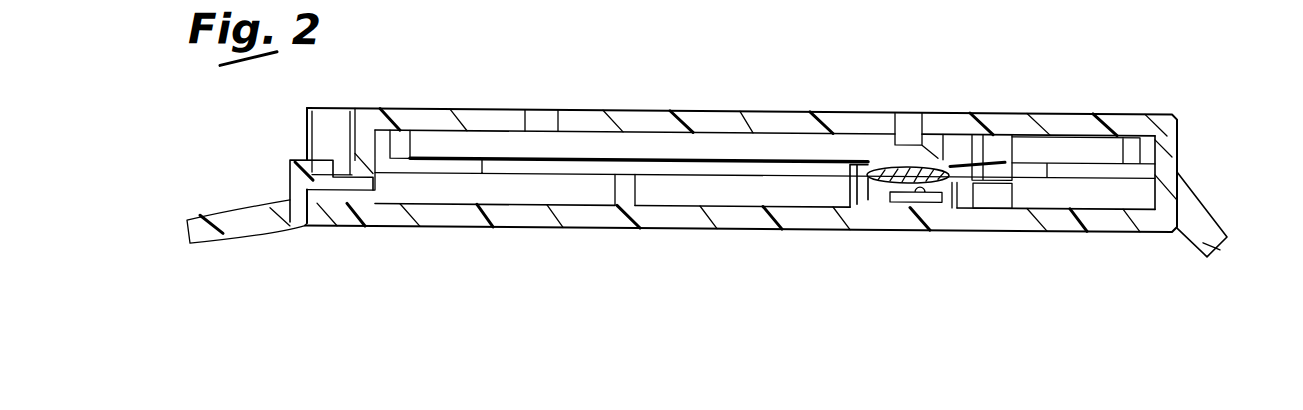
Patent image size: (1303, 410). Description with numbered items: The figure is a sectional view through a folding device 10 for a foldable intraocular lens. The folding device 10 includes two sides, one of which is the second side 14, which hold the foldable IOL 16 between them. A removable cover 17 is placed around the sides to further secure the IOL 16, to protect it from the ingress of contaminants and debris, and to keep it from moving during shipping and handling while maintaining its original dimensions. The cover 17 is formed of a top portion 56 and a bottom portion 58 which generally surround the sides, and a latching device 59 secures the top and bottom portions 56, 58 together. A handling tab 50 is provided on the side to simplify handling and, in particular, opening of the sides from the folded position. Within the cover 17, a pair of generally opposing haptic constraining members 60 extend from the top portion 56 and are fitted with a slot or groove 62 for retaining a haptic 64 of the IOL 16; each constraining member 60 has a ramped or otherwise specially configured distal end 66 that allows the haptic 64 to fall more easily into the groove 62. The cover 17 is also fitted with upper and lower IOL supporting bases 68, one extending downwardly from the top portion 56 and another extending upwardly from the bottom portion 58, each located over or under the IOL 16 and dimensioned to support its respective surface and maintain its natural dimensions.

The folding device 10 is at (595, 92).
The second side 14 is at (792, 0).
The foldable IOL 16 is at (893, 188).
The removable cover 17 is at (437, 107).
The handling tab 50 is at (1210, 189).
The top portion 56 is at (730, 105).
The bottom portion 58 is at (577, 226).
The latching device 59 is at (296, 178).
The haptic constraining member 60 is at (1020, 135).
The slot or groove 62 is at (990, 178).
The haptic 64 is at (857, 179).
The distal end 66 is at (1007, 178).
The IOL supporting base 68 is at (911, 156).